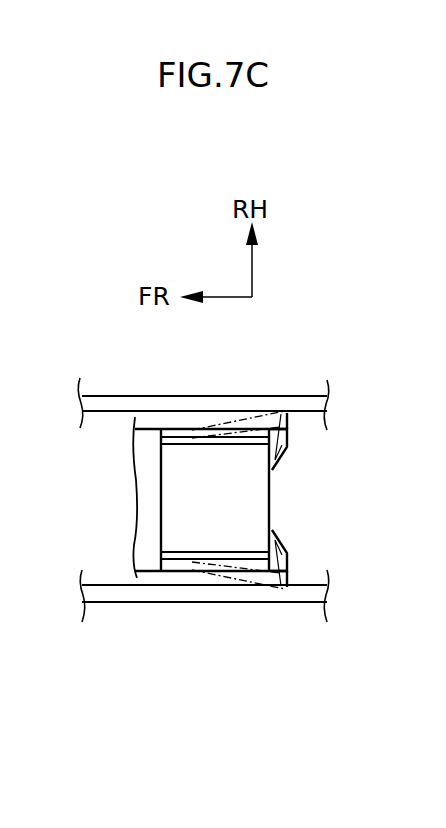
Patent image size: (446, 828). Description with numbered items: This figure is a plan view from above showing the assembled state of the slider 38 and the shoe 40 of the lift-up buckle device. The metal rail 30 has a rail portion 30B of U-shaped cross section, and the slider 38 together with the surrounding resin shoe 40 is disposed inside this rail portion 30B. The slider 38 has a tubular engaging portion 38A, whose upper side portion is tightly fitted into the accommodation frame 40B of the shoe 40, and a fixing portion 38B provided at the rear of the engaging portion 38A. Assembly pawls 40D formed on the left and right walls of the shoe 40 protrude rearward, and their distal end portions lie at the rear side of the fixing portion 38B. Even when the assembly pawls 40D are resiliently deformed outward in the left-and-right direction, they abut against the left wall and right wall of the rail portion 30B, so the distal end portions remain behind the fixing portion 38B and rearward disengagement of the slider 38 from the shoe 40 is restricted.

The rail 30 is at (98, 396).
The rail portion 30B is at (102, 603).
The shoe 40 is at (142, 463).
The accommodation frame 40B is at (145, 538).
The slider 38 is at (172, 501).
The engaging portion 38A is at (256, 481).
The fixing portion 38B is at (256, 511).
The assembly pawls 40D is at (289, 450).